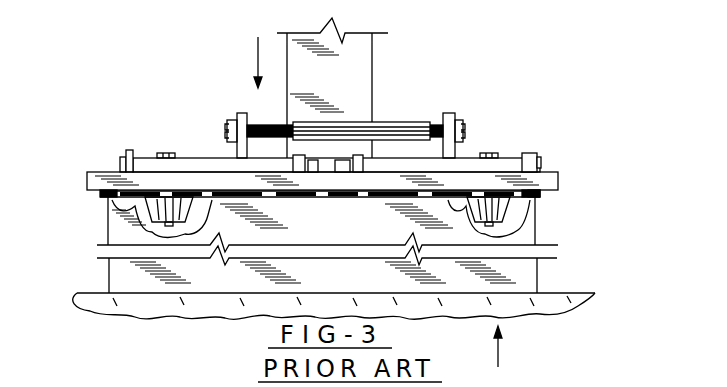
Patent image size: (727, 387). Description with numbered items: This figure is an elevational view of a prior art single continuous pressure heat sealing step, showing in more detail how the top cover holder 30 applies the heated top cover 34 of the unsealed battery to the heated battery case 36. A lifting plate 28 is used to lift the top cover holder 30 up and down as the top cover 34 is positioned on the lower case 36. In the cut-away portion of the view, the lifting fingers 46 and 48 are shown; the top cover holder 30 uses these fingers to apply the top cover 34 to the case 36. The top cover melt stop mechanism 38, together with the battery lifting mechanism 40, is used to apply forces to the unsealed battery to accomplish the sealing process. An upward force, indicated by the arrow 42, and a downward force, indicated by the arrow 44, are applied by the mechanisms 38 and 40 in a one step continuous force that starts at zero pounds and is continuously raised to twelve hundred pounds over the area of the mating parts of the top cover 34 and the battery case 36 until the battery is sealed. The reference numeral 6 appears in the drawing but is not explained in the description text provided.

The anchor bolts 6 is at (100, 188).
The lifting plate 28 is at (350, 88).
The top cover holder 30 is at (546, 178).
The top cover 34 is at (541, 196).
The battery case 36 is at (328, 237).
The top cover melt stop mechanism 38 is at (397, 105).
The battery lifting mechanism 40 is at (576, 290).
The arrow 42 is at (500, 349).
The arrow 44 is at (255, 60).
The lifting finger 46 is at (527, 222).
The lifting finger 48 is at (157, 208).